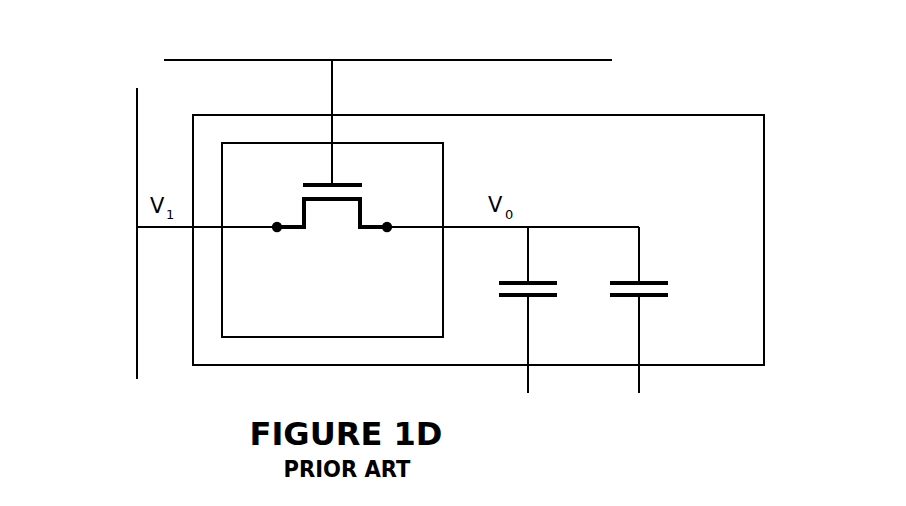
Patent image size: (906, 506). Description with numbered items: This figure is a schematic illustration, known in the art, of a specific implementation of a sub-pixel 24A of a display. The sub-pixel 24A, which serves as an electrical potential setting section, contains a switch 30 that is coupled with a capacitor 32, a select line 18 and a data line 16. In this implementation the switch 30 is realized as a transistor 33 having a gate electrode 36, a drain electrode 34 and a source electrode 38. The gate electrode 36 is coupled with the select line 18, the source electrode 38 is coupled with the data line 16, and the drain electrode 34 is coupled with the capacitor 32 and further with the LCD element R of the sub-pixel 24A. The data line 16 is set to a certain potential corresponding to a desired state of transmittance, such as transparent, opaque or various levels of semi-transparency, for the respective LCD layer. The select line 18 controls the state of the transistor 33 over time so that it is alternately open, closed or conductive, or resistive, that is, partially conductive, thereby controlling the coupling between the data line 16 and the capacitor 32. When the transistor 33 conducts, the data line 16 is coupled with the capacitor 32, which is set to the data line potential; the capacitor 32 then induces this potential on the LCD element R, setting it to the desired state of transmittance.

The data line 16 is at (137, 146).
The select line 18 is at (248, 60).
The sub-pixel 24A is at (447, 162).
The switch 30 is at (346, 186).
The transistor 33 is at (338, 203).
The drain electrode 34 is at (375, 221).
The gate electrode 36 is at (350, 180).
The source electrode 38 is at (297, 222).
The capacitor 32 is at (510, 280).
The LCD element R is at (658, 282).